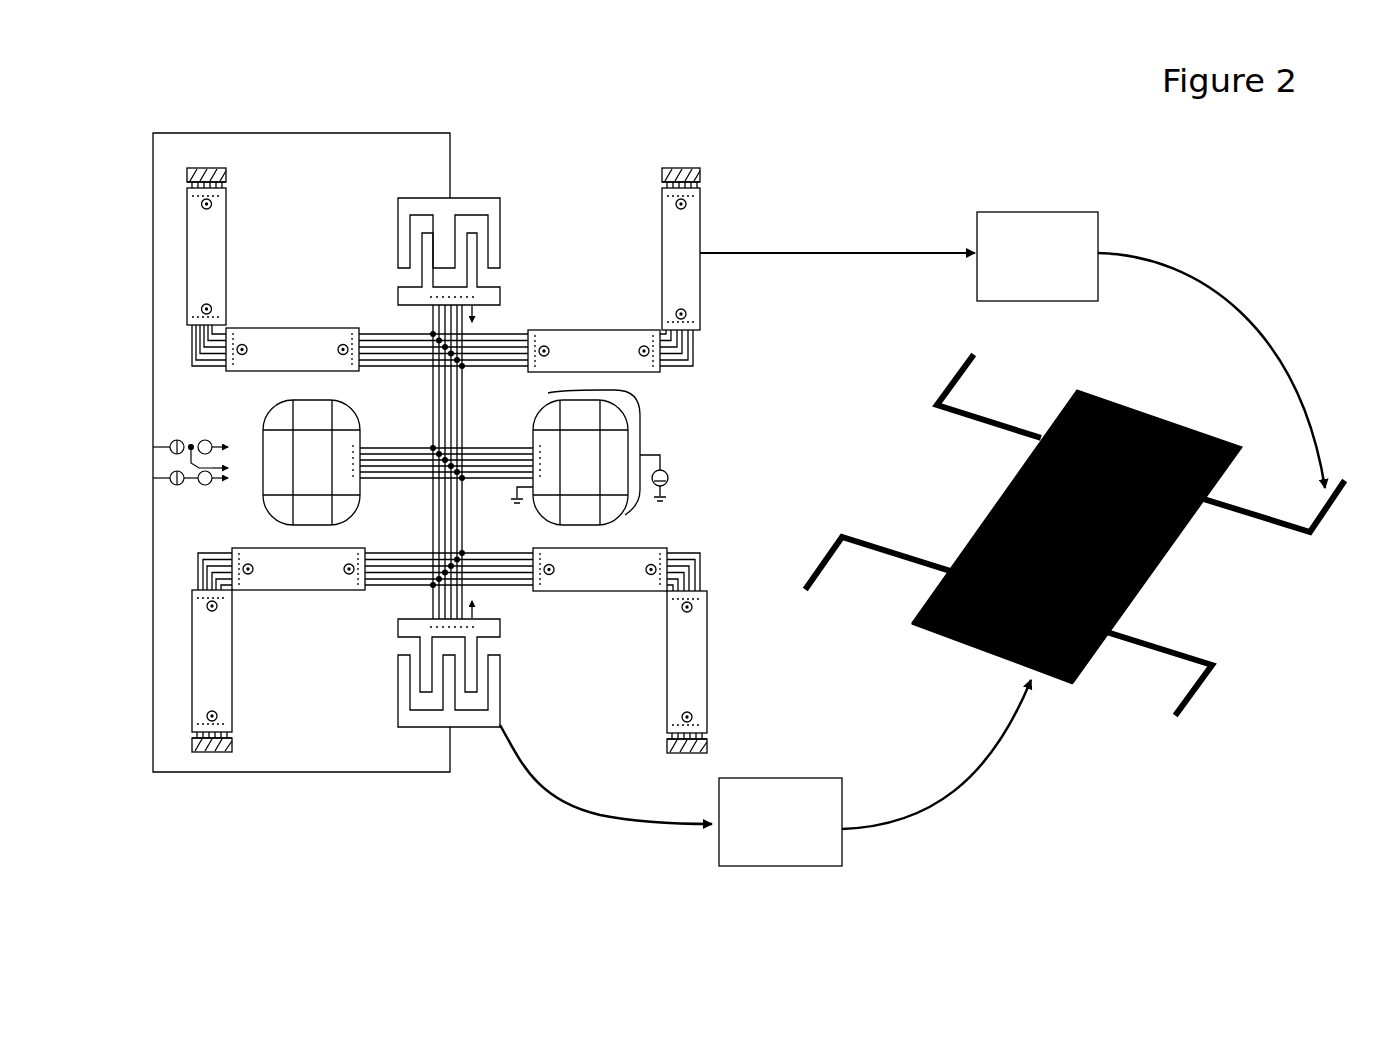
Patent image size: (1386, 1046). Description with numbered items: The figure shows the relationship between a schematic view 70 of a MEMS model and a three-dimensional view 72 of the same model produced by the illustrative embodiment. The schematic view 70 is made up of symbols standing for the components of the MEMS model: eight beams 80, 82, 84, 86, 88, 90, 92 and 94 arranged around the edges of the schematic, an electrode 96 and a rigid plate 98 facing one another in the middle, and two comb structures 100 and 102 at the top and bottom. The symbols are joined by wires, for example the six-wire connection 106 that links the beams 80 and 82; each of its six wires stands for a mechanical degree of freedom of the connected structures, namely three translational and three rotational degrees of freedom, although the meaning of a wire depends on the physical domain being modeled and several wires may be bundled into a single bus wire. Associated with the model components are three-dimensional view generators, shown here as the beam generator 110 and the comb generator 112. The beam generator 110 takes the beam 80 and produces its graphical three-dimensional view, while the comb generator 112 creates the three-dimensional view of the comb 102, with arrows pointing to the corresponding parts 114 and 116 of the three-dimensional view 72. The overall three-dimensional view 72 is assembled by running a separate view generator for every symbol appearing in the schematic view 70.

The schematic view 70 is at (291, 117).
The 3D view 72 is at (1215, 603).
The beam 80 is at (700, 222).
The beam 82 is at (571, 328).
The beam 84 is at (290, 327).
The beam 86 is at (226, 227).
The beam 88 is at (262, 592).
The beam 90 is at (232, 705).
The beam 92 is at (553, 593).
The beam 94 is at (707, 660).
The electrode 96 is at (640, 417).
The rigid plate 98 is at (352, 407).
The comb structure 100 is at (500, 200).
The comb structure 102 is at (487, 727).
The 6-wire connection 106 is at (693, 362).
The beam generator 110 is at (1048, 210).
The comb generator 112 is at (820, 868).
The actuator terminal 114 is at (1337, 502).
The actuator edge 116 is at (975, 648).